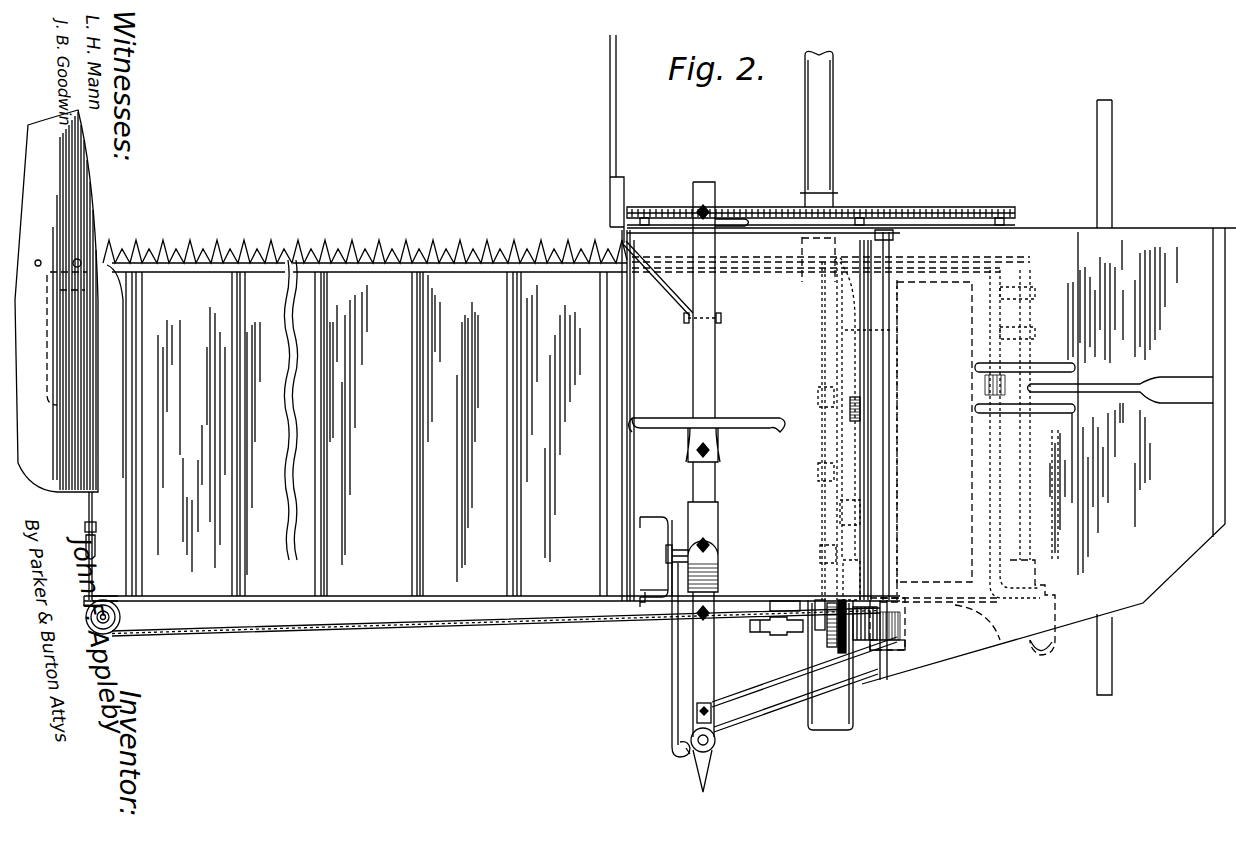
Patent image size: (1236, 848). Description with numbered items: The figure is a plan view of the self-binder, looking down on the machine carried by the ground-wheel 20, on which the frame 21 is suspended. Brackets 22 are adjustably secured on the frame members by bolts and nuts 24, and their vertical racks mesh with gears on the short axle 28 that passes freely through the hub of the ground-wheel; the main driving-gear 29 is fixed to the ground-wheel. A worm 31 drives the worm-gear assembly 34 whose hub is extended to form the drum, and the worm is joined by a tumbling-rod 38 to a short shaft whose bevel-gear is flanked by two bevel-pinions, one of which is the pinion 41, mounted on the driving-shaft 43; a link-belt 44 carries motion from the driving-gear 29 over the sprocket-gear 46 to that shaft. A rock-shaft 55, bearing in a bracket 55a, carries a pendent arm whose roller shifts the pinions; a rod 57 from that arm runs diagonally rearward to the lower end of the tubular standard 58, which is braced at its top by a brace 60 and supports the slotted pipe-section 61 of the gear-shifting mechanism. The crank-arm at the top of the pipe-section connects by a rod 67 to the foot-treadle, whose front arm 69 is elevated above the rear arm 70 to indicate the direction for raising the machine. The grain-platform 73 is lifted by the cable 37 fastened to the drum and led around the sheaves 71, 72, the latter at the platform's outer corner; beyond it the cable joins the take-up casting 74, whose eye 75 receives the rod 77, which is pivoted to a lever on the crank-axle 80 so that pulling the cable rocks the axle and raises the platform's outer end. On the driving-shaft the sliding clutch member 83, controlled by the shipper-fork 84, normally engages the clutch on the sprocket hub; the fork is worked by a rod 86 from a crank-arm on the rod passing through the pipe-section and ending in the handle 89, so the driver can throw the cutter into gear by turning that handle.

The ground-wheel 20 is at (916, 582).
The frame 21 is at (1000, 527).
The brackets 22 is at (830, 445).
The nuts 24 is at (988, 347).
The short axle 28 is at (885, 331).
The main driving-gear 29 is at (872, 397).
The worm 31 is at (857, 433).
The screw 34 is at (855, 397).
The cable 37 is at (400, 633).
The tumbling-rod 38 is at (850, 530).
The bevel-pinion 41 is at (812, 644).
The driving-shaft 43 is at (815, 633).
The link-belt 44 is at (900, 607).
The sprocket-gear 46 is at (877, 657).
The rock-shaft 55 is at (843, 650).
The bracket 55a is at (847, 603).
The rod 57 is at (775, 698).
The tubular standard 58 is at (715, 742).
The brace 60 is at (712, 648).
The pipe-section 61 is at (666, 552).
The rod 67 is at (672, 676).
The treadle arm 69 is at (655, 517).
The treadle arm 70 is at (667, 600).
The sheave 71 is at (826, 605).
The sheave 72 is at (88, 602).
The platform 73 is at (363, 415).
The casting 74 is at (86, 543).
The eye 75 is at (92, 518).
The rod 77 is at (88, 507).
The crank-axle 80 is at (50, 364).
The sliding clutch member 83 is at (940, 622).
The shipper-fork 84 is at (900, 647).
The rod 86 is at (775, 720).
The handle 89 is at (688, 756).